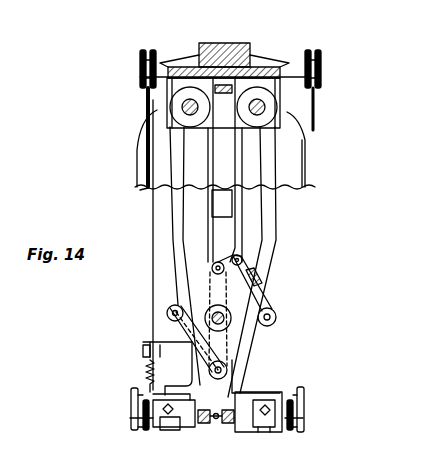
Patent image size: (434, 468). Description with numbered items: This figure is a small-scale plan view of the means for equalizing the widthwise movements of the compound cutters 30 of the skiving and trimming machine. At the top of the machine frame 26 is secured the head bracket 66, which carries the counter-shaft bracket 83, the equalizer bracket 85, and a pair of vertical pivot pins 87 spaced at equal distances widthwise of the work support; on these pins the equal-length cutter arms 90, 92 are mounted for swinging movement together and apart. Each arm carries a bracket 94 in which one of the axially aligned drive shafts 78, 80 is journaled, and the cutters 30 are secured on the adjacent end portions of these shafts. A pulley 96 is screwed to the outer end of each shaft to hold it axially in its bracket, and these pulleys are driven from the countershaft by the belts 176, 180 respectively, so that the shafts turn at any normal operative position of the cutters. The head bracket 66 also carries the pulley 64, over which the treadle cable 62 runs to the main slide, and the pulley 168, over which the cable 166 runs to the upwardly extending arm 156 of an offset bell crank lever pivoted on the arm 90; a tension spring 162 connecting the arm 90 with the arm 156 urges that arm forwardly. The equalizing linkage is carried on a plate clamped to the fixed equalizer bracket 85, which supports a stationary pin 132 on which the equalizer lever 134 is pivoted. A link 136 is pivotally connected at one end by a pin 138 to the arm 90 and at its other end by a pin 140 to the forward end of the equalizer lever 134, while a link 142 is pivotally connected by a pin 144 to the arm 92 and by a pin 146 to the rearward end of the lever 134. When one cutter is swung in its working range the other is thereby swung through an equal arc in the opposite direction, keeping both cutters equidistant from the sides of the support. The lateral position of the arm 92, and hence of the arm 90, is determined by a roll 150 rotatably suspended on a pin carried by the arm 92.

The head bracket 66 is at (232, 45).
The pulley 168 is at (140, 62).
The pulley 64 is at (321, 68).
The vertical pivot pins 87 is at (182, 104).
The machine frame 26 is at (146, 164).
The cable 166 is at (142, 191).
The cable 62 is at (316, 122).
The cutter arm 90 is at (173, 242).
The cutter arm 92 is at (263, 250).
The counter-shaft bracket 83 is at (230, 211).
The equalizer bracket 85 is at (230, 248).
The roll 150 is at (242, 258).
The link 136 is at (207, 333).
The link 142 is at (256, 292).
The pin 146 is at (258, 272).
The pin 144 is at (276, 317).
The stationary pin 132 is at (232, 326).
The equalizer lever 134 is at (196, 287).
The pin 138 is at (167, 312).
The pin 140 is at (228, 369).
The upwardly extending arm 156 is at (143, 350).
The tension spring 162 is at (154, 376).
The drive shaft 78 is at (133, 403).
The belt 176 is at (145, 432).
The pulley 96 is at (132, 425).
The bracket 94 is at (170, 429).
The compound cutters 30 is at (205, 425).
The drive shaft 80 is at (307, 410).
The belt 180 is at (288, 395).